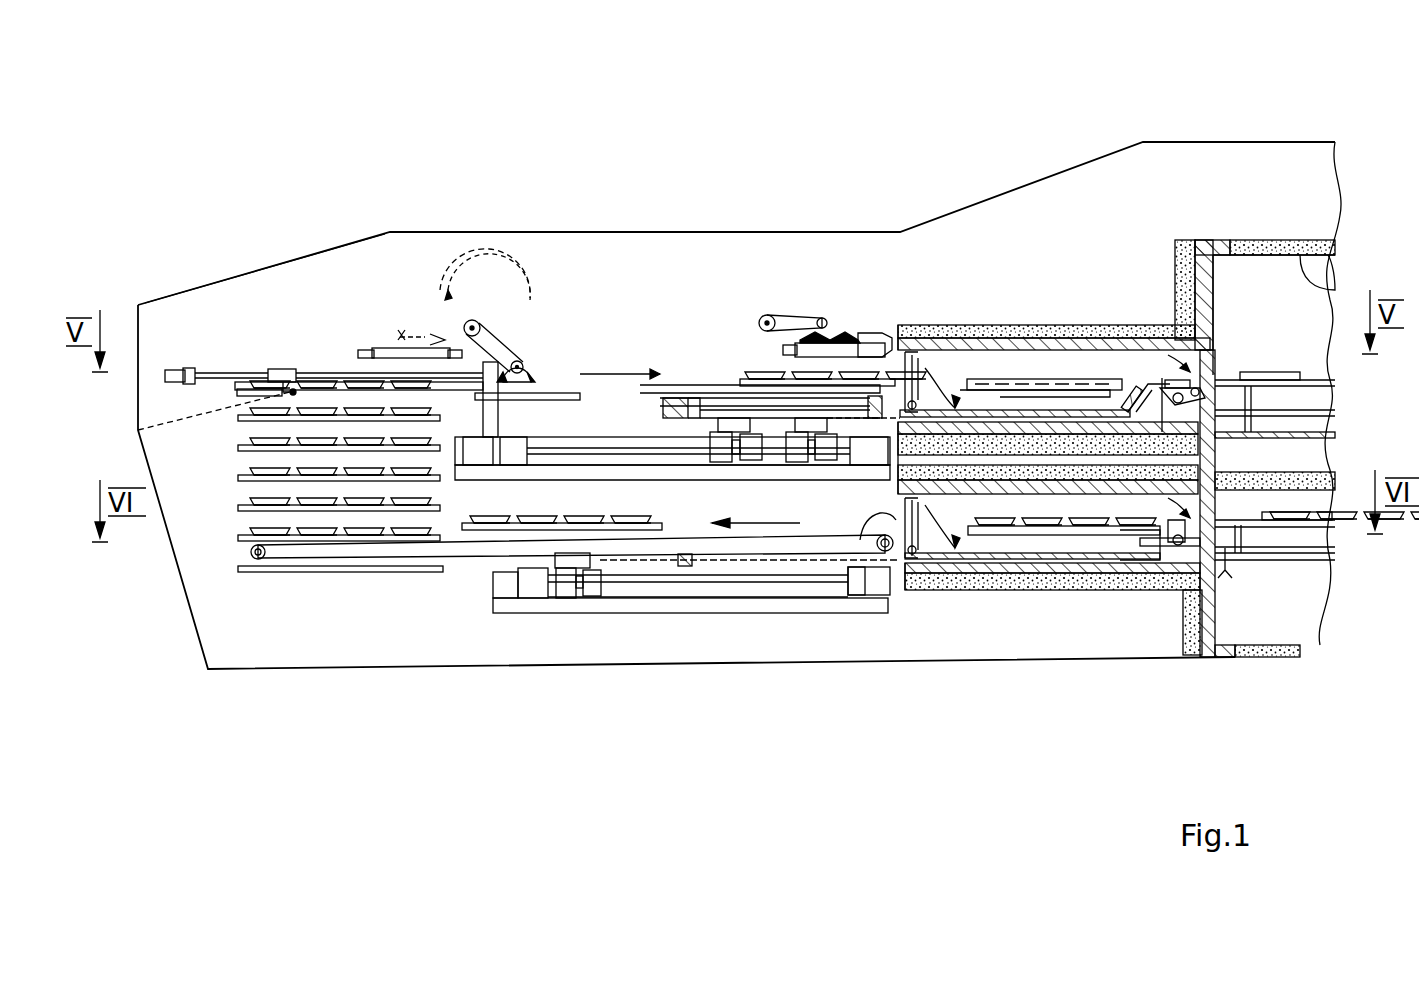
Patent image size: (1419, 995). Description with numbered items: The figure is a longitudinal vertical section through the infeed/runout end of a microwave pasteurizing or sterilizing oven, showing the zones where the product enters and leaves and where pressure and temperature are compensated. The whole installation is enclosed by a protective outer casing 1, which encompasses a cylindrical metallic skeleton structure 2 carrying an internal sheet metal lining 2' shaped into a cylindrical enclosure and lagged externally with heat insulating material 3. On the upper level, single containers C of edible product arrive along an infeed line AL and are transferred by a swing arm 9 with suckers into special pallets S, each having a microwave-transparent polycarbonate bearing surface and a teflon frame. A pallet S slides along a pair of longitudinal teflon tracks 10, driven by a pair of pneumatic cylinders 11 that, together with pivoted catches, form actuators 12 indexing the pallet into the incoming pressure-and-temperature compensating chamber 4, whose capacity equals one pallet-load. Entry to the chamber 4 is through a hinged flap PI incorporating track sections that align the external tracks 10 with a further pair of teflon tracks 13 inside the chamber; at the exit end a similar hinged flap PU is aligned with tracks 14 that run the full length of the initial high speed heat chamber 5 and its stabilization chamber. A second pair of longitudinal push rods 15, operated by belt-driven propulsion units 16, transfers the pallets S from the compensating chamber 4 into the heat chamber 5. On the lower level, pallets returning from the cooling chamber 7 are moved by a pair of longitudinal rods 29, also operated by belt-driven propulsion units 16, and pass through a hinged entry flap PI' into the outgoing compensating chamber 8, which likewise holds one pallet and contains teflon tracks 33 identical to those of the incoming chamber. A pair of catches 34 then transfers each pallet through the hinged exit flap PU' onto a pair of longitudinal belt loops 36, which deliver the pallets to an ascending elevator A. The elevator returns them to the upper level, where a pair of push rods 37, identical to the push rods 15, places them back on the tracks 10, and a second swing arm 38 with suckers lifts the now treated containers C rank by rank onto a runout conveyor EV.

The protective outer casing 1 is at (1035, 176).
The cylindrical metallic skeleton structure 2 is at (1071, 473).
The internal sheet metal lining 2' is at (1346, 235).
The heat insulating material 3 is at (1283, 247).
The incoming pressure-and-temperature compensating chamber 4 is at (982, 372).
The initial high speed heat chamber 5 is at (1290, 326).
The cooling chamber 7 is at (1310, 597).
The outgoing compensating chamber 8 is at (1125, 545).
The swing arm 9 is at (792, 316).
The longitudinal tracks 10 is at (548, 390).
The pneumatic cylinders 11 is at (682, 414).
The actuators 12 is at (685, 400).
The longitudinal teflon tracks 13 is at (1068, 395).
The longitudinal teflon tracks 14 is at (1280, 390).
The second pair of longitudinal push rods 15 is at (1112, 410).
The belt-driven propulsion units 16 is at (732, 465).
The longitudinal rods 29 is at (650, 565).
The longitudinal teflon tracks 33 is at (1112, 505).
The catches 34 is at (1165, 510).
The longitudinal belt loops 36 is at (790, 535).
The push rods 37 is at (290, 395).
The swing arm 38 is at (496, 360).
The ascending elevator A is at (218, 272).
The infeed line AL is at (770, 385).
The containers C is at (405, 330).
The runout conveyor EV is at (378, 360).
The hinged entry flap PI is at (1047, 245).
The hinged entry flap PI' is at (1102, 619).
The hinged exit flap PU is at (1312, 416).
The hinged exit flap PU' is at (878, 633).
The pallets S is at (690, 378).